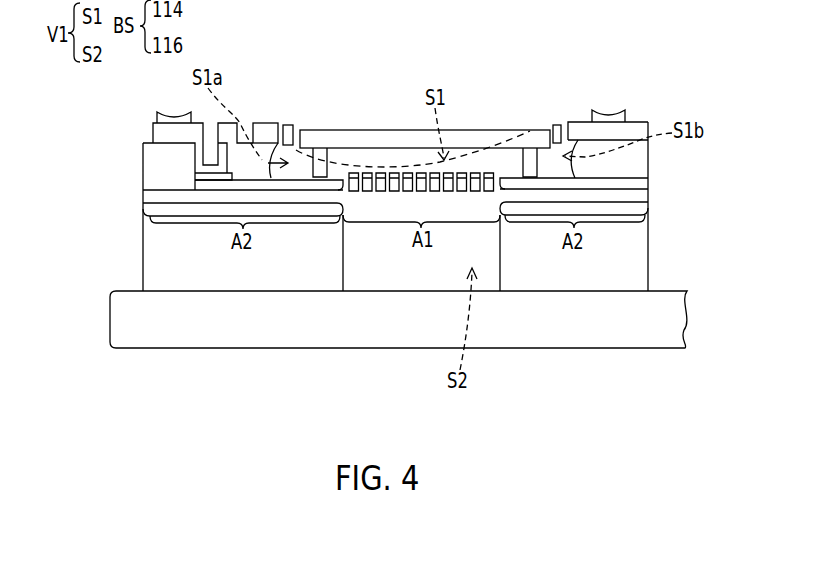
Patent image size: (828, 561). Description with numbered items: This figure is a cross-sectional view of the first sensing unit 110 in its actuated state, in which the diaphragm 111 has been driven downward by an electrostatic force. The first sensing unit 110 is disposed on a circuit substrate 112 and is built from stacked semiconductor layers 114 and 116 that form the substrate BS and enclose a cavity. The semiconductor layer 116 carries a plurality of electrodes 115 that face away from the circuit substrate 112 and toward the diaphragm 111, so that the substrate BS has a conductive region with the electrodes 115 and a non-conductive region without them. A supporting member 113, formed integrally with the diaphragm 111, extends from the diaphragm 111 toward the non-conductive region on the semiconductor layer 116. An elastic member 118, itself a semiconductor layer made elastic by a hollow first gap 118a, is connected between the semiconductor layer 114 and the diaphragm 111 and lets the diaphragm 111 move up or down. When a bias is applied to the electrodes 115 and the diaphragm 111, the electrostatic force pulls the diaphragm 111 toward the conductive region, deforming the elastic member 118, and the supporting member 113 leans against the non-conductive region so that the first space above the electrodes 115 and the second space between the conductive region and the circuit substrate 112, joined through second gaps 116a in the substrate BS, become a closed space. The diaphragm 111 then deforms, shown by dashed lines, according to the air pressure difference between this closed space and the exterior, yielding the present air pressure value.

The first sensing unit 110 is at (662, 54).
The diaphragm 111 is at (455, 129).
The circuit substrate 112 is at (130, 329).
The supporting member 113 is at (336, 148).
The semiconductor layer 114 is at (150, 231).
The electrodes 115 is at (458, 171).
The semiconductor layer 116 is at (582, 182).
The second gap 116a is at (420, 165).
The elastic member 118 is at (285, 127).
The first gap 118a is at (281, 127).